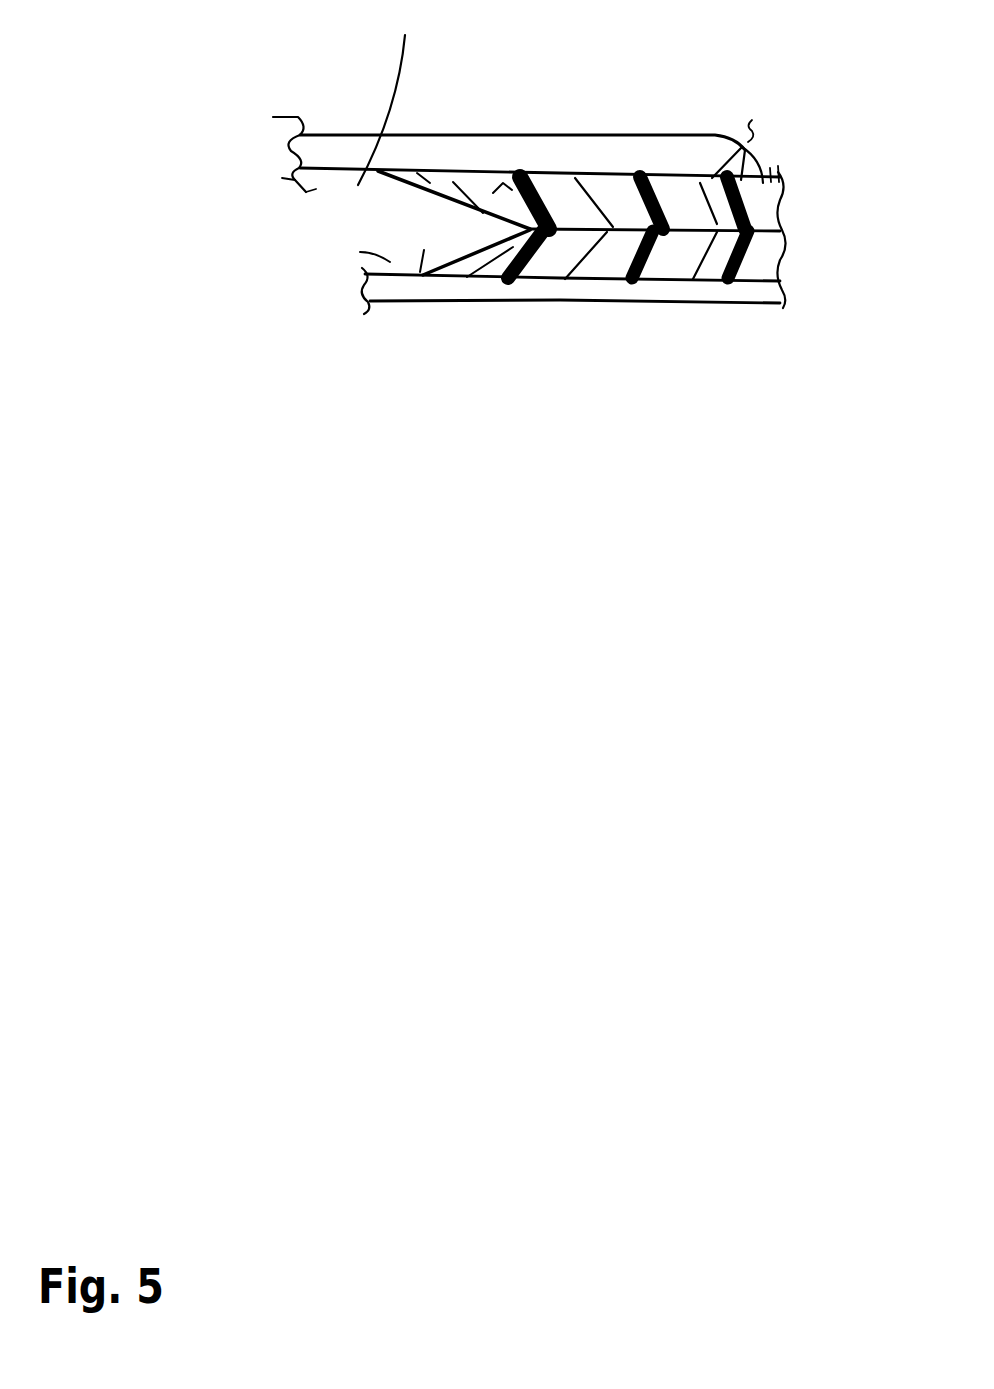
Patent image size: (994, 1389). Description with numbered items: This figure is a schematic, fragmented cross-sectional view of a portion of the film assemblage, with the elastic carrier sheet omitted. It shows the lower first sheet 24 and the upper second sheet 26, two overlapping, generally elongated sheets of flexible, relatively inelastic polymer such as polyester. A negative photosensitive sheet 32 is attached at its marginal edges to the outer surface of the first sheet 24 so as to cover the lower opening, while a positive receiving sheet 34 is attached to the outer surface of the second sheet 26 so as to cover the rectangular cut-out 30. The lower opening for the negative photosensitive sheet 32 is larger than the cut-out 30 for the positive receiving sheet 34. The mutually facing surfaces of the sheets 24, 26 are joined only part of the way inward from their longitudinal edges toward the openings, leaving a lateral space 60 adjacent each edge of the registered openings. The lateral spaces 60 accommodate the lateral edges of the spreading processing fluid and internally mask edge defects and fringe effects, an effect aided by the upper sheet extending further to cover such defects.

The first sheet 24 is at (690, 282).
The second sheet 26 is at (740, 147).
The rectangular cut-out 30 is at (360, 184).
The negative photosensitive sheet 32 is at (418, 288).
The positive receiving sheet 34 is at (328, 138).
The lateral space 60 is at (453, 230).